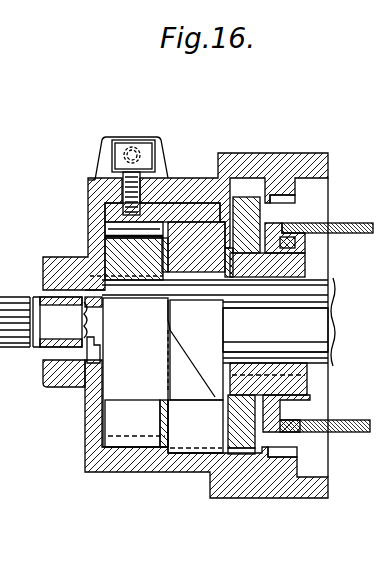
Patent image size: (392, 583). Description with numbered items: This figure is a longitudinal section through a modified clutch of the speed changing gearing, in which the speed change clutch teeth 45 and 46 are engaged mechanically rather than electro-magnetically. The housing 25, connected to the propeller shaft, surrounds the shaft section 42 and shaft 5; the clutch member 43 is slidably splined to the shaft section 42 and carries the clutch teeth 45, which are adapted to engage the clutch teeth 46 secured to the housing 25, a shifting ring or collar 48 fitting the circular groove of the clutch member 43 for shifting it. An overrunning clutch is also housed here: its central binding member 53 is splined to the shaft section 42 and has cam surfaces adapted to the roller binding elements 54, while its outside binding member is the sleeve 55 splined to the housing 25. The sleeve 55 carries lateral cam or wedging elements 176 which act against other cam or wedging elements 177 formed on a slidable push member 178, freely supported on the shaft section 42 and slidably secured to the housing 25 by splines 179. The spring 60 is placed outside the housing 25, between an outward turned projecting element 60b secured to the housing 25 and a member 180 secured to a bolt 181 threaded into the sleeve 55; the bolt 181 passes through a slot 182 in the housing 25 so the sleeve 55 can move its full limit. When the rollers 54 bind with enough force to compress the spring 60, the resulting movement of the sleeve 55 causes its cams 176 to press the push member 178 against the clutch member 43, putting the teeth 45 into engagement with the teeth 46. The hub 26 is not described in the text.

The shaft 5 is at (43, 322).
The housing 25 is at (300, 494).
The hub 26 is at (43, 364).
The shaft section 42 is at (323, 332).
The clutch member 43 is at (290, 267).
The clutch teeth 45 is at (245, 453).
The clutch teeth 46 is at (284, 197).
The shifting ring or collar 48 is at (357, 223).
The central binding member 53 is at (118, 258).
The roller binding elements 54 is at (113, 230).
The sleeve 55 is at (105, 206).
The spring 60 is at (132, 150).
The projecting element 60b is at (162, 141).
The cam or wedging elements 176 is at (190, 383).
The cam or wedging elements 177 is at (212, 327).
The push member 178 is at (198, 237).
The splines 179 is at (163, 448).
The member 180 is at (150, 153).
The bolt 181 is at (143, 166).
The slot 182 is at (95, 180).